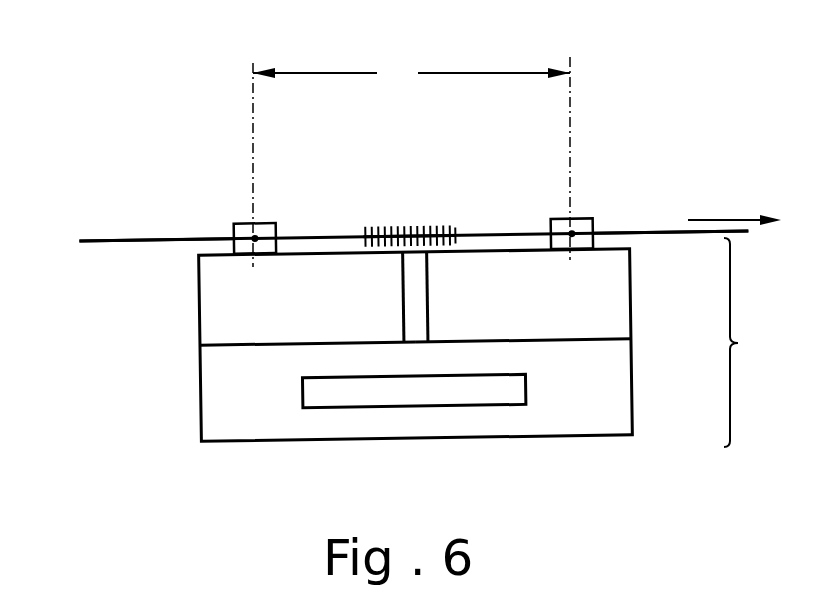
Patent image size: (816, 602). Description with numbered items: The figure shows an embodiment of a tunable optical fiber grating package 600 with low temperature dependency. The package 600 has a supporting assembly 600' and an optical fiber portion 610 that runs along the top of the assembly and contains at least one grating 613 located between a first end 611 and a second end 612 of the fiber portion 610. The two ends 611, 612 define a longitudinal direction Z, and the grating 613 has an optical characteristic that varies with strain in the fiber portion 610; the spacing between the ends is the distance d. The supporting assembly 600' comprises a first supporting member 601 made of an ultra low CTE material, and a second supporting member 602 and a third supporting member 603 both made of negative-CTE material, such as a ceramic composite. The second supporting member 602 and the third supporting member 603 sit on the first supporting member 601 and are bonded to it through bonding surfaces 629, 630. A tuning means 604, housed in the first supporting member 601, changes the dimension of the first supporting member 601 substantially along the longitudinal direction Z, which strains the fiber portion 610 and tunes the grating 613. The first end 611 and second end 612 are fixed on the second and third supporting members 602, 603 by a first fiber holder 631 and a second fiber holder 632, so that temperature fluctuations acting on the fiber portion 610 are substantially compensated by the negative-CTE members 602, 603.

The tunable optical fiber grating package 600 is at (415, 145).
The supporting assembly 600' is at (763, 342).
The first supporting member 601 is at (277, 420).
The second supporting member 602 is at (333, 297).
The third supporting member 603 is at (487, 297).
The tuning means 604 is at (503, 393).
The optical fiber portion 610 is at (500, 236).
The first end 611 is at (251, 228).
The second end 612 is at (573, 225).
The grating 613 is at (458, 219).
The bonding surface 629 is at (308, 363).
The bonding surface 630 is at (523, 357).
The first fiber holder 631 is at (236, 235).
The second fiber holder 632 is at (593, 222).